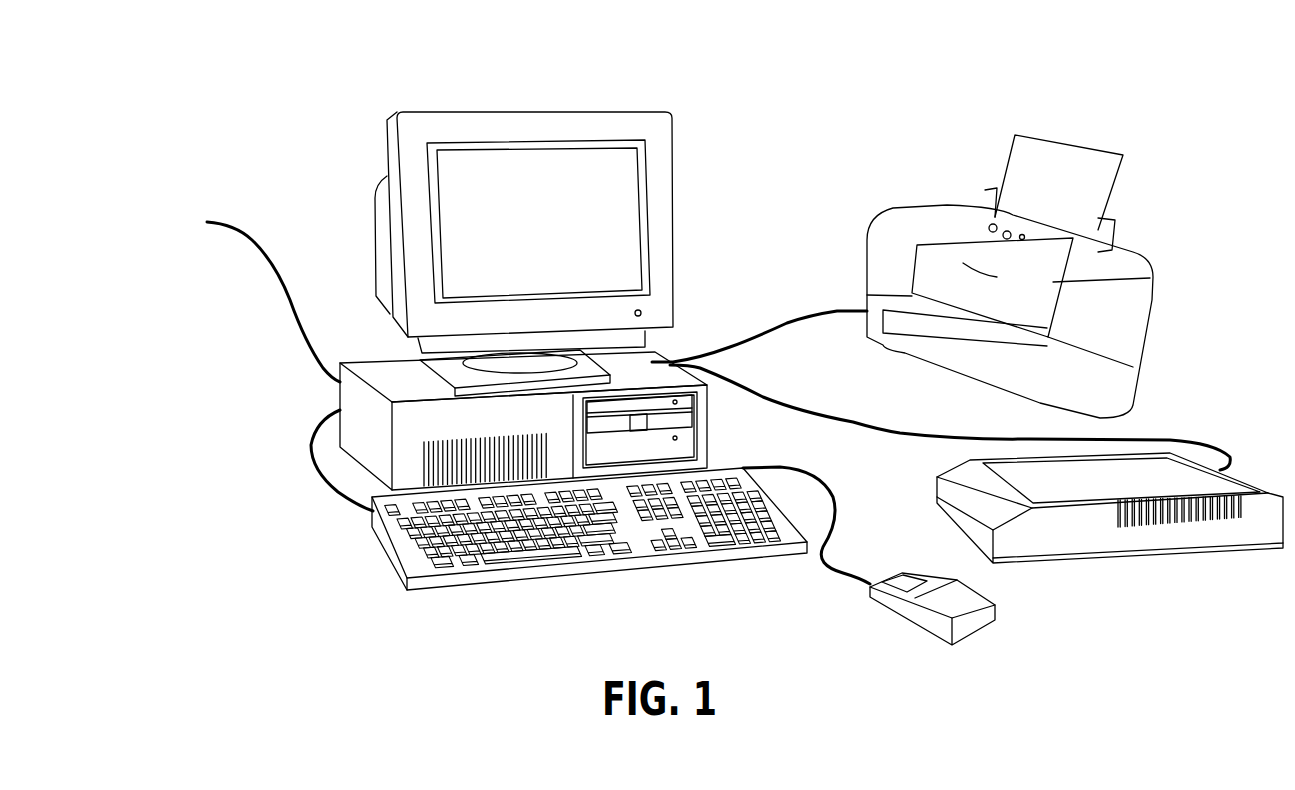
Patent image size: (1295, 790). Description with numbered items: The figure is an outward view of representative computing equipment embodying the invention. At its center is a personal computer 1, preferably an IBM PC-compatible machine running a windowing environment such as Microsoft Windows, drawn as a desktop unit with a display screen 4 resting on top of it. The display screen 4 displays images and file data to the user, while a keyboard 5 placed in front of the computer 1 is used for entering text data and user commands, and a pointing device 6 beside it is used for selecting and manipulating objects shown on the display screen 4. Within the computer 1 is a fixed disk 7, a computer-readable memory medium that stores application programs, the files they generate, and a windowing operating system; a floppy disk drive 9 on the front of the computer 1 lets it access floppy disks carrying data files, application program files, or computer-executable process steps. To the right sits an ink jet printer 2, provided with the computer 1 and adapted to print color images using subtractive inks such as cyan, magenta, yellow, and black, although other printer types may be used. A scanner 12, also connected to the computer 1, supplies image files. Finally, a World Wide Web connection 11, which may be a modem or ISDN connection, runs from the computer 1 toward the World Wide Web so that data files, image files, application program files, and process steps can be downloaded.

The personal computer 1 is at (712, 116).
The ink jet printer 2 is at (893, 208).
The display screen 4 is at (615, 268).
The keyboard 5 is at (467, 565).
The pointing device 6 is at (972, 637).
The fixed disk 7 is at (559, 421).
The floppy disk drive 9 is at (662, 421).
The World Wide Web connection 11 is at (277, 270).
The scanner 12 is at (1150, 562).